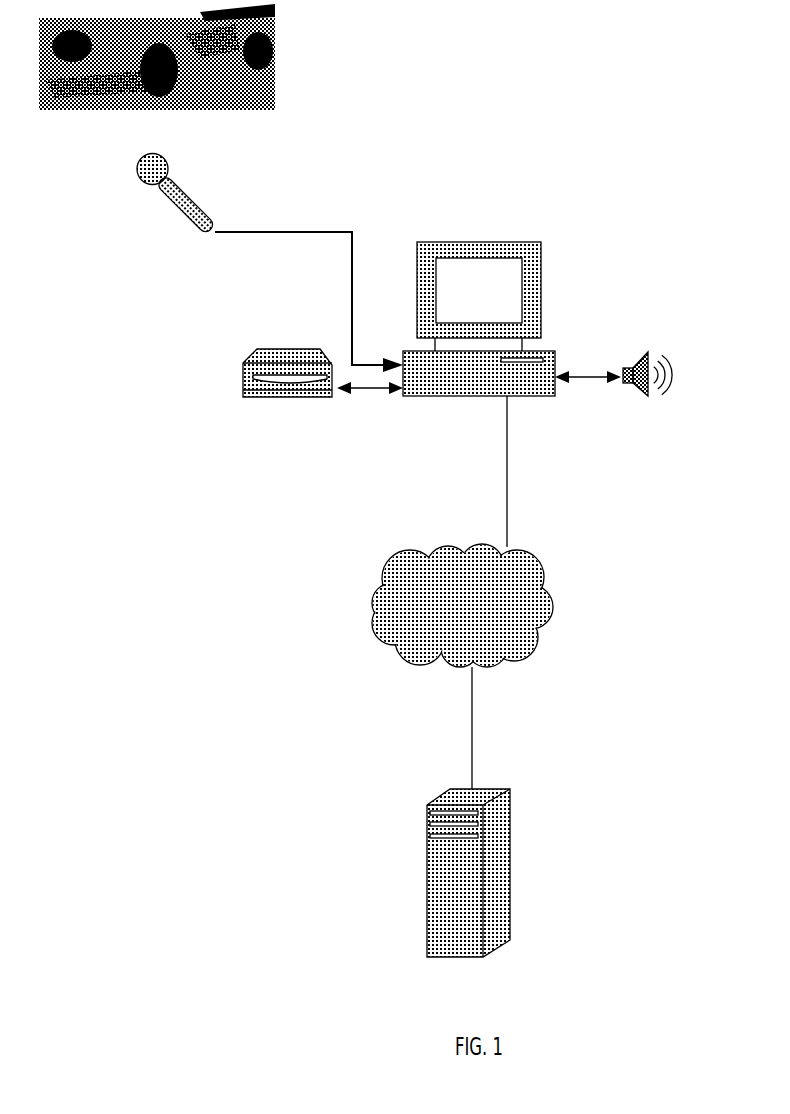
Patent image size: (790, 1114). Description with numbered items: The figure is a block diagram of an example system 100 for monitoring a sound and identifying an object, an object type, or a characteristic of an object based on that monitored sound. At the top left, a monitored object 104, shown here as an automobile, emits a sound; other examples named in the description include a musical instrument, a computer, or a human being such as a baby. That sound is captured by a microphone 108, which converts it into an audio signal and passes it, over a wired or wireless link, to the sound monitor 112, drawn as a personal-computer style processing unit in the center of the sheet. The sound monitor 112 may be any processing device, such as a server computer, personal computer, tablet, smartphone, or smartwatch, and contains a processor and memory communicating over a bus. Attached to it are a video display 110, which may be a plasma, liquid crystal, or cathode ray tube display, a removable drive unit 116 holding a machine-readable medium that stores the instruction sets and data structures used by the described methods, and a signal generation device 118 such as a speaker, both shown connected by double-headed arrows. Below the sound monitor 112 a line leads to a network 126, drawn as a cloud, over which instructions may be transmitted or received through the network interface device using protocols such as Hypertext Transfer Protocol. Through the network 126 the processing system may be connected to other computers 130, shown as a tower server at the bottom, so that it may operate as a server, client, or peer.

The system 100 is at (512, 62).
The monitored object 104 is at (230, 108).
The microphone 108 is at (195, 195).
The video display 110 is at (541, 252).
The sound monitor 112 is at (415, 396).
The removable drive unit 116 is at (255, 398).
The signal generation device 118 is at (650, 393).
The network 126 is at (547, 622).
The other computers 130 is at (510, 818).